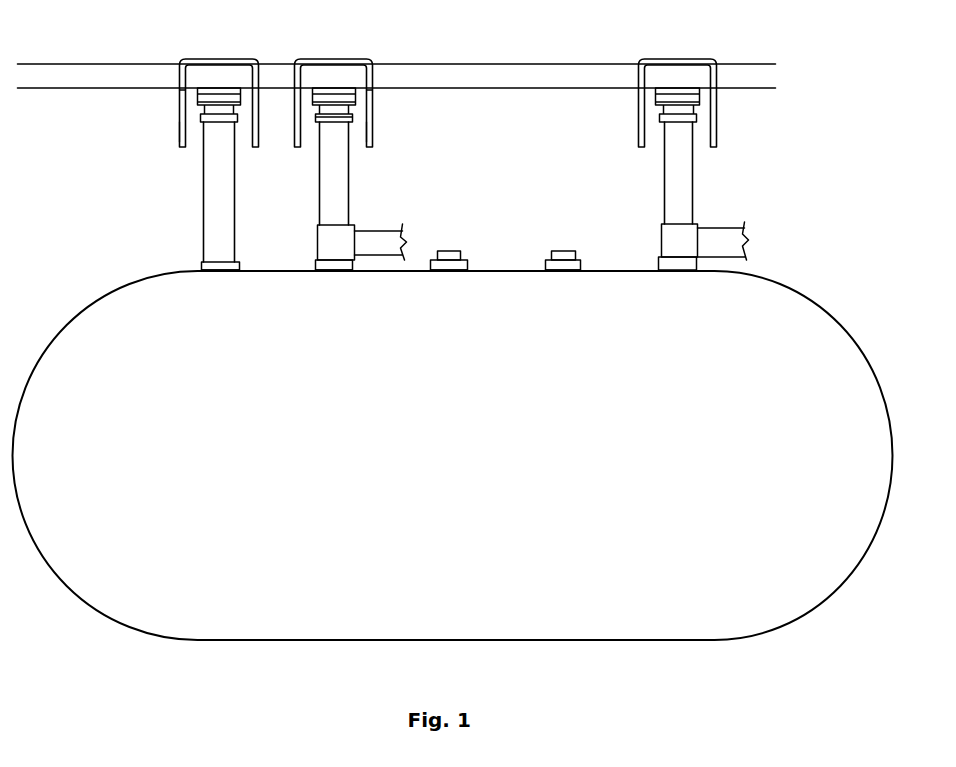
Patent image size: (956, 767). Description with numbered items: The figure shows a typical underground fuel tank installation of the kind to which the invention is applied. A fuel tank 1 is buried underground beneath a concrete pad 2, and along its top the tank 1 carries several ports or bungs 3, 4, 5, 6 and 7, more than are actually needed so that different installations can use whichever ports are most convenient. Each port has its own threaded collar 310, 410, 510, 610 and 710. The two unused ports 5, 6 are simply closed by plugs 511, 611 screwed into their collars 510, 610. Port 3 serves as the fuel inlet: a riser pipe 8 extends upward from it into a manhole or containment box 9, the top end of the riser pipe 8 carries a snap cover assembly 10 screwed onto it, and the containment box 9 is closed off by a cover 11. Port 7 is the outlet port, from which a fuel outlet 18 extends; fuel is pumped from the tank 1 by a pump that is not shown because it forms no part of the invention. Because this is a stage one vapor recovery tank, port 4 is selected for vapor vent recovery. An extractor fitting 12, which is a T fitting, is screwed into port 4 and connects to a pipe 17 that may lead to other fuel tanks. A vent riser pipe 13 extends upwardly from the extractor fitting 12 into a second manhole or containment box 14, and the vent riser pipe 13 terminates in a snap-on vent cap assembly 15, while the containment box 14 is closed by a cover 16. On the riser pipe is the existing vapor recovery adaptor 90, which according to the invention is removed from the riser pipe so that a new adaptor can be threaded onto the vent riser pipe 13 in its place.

The fuel tank 1 is at (820, 312).
The concrete pad 2 is at (735, 62).
The port 3 is at (215, 270).
The port 4 is at (330, 270).
The port 5 is at (447, 270).
The port 6 is at (556, 270).
The outlet port 7 is at (676, 270).
The riser pipe 8 is at (201, 190).
The containment box 9 is at (177, 125).
The snap cover assembly 10 is at (226, 86).
The cover 11 is at (201, 57).
The extractor fitting 12 is at (315, 240).
The vent riser pipe 13 is at (317, 190).
The containment box 14 is at (367, 125).
The vent cap assembly 15 is at (340, 86).
The cover 16 is at (320, 57).
The pipe 17 is at (352, 224).
The fuel outlet 18 is at (690, 197).
The vapor recovery adaptor 90 is at (345, 118).
The threaded collar 310 is at (199, 262).
The threaded collar 410 is at (313, 263).
The threaded collar 510 is at (465, 263).
The plug 511 is at (446, 249).
The threaded collar 610 is at (578, 262).
The plug 611 is at (560, 249).
The threaded collar 710 is at (656, 263).